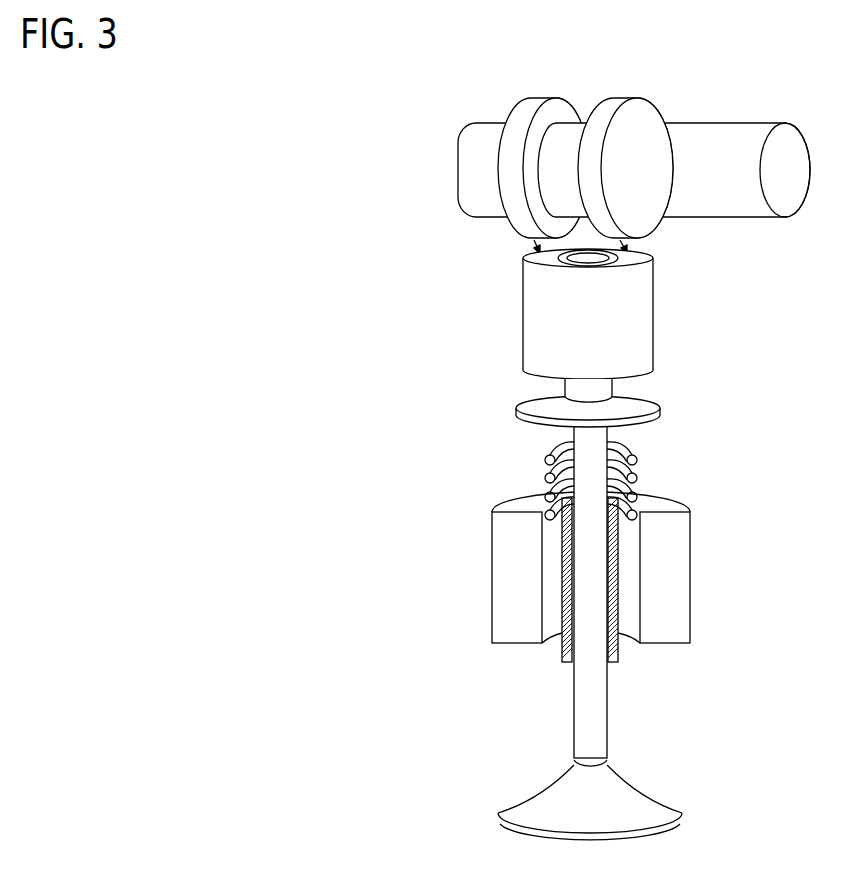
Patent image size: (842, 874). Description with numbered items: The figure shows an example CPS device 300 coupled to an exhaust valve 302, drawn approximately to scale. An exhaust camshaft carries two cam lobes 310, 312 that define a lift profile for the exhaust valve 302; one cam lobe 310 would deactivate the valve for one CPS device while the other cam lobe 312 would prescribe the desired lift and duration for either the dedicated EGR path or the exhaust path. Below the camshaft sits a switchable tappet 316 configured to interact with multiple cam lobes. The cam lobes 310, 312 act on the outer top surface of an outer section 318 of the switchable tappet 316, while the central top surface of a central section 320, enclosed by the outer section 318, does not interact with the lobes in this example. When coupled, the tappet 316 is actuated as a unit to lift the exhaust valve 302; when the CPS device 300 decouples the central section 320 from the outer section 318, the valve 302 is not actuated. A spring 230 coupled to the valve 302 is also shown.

The CPS device 300 is at (303, 136).
The cam lobe 310 is at (556, 96).
The cam lobe 312 is at (642, 96).
The switchable tappet 316 is at (523, 318).
The outer section 318 is at (527, 258).
The central section 320 is at (646, 259).
The valve spring 230 is at (622, 450).
The exhaust valve 302 is at (608, 720).